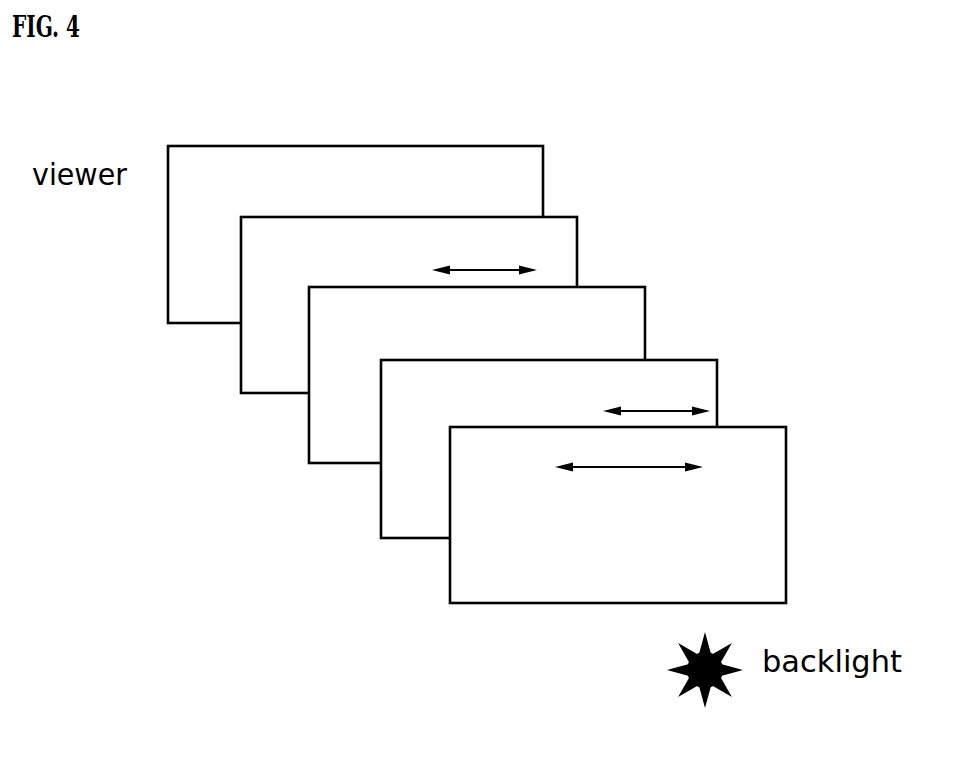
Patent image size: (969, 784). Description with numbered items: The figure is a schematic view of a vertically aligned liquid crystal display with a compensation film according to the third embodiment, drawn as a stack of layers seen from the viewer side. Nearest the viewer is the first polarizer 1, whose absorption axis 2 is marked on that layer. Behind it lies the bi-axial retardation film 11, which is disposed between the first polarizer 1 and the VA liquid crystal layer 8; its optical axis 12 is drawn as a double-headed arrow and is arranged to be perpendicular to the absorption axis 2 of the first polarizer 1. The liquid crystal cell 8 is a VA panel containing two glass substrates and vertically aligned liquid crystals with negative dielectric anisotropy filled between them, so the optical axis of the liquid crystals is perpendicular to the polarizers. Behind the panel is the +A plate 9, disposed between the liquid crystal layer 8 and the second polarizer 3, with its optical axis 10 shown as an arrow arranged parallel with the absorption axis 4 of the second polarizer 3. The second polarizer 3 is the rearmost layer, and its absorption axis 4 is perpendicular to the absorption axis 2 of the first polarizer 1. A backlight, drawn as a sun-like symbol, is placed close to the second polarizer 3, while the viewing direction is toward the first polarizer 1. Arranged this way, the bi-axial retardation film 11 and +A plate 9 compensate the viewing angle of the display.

The first polarizer 1 is at (355, 234).
The absorption axis of the first polarizer 2 is at (194, 181).
The second polarizer 3 is at (618, 515).
The absorption axis of the second polarizer 4 is at (660, 469).
The liquid crystal cell 8 is at (477, 375).
The +A plate 9 is at (549, 449).
The optical axis of the +A plate 10 is at (656, 393).
The bi-axial retardation film 11 is at (409, 305).
The optical axis of the bi-axial retardation film 12 is at (484, 250).